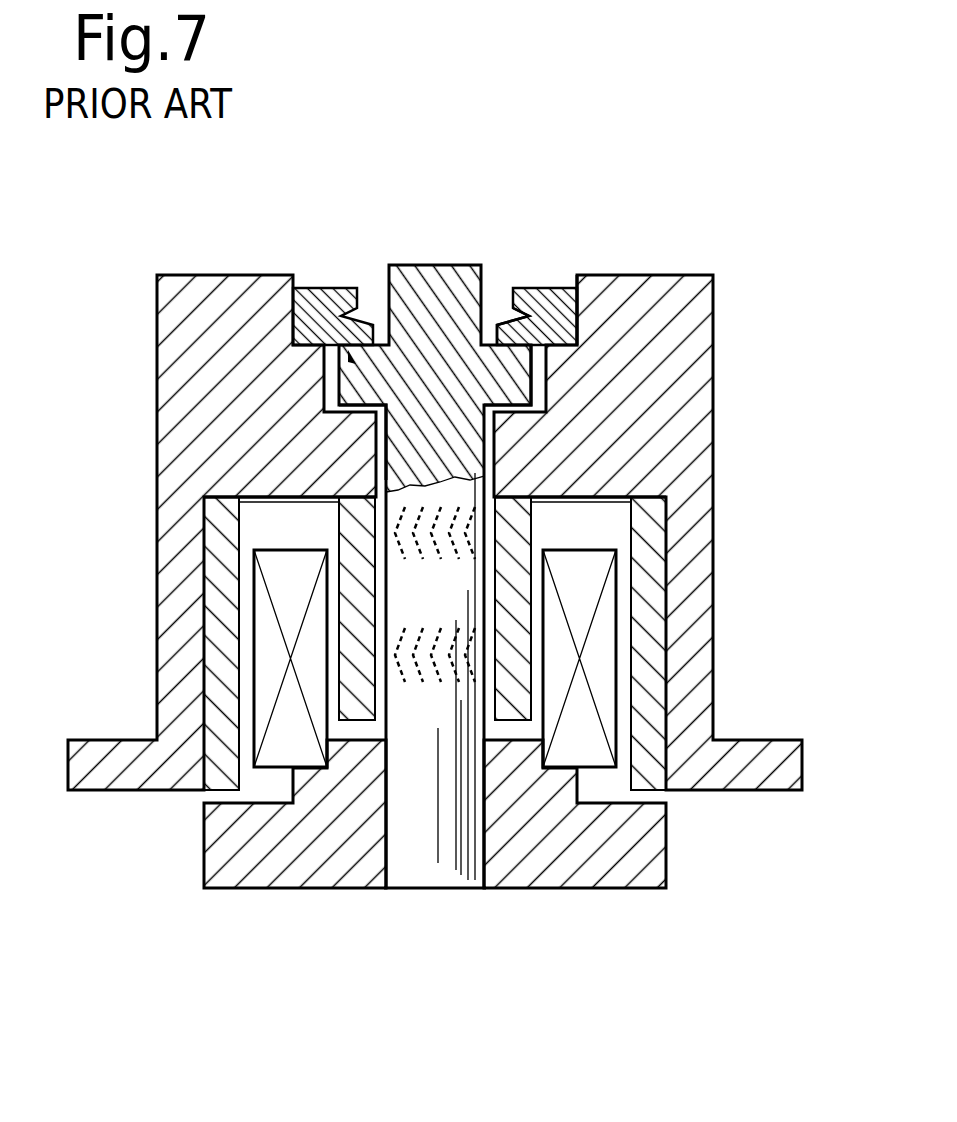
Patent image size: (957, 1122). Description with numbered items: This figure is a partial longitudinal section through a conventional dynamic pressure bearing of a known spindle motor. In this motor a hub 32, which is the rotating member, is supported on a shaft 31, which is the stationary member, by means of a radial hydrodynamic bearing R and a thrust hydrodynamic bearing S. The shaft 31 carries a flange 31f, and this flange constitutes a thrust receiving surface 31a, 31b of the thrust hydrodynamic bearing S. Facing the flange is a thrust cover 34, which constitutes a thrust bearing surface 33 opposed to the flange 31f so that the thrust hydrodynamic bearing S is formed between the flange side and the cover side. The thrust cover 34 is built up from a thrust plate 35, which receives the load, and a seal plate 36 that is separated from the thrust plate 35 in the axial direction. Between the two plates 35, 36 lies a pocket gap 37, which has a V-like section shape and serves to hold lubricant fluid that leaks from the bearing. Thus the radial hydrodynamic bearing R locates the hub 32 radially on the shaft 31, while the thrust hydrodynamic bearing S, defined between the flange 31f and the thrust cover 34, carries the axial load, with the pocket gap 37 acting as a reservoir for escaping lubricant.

The shaft 31 is at (403, 813).
The thrust receiving surface 31a is at (318, 292).
The thrust receiving surface 31b is at (348, 440).
The flange 31f is at (540, 378).
The hub 32 is at (660, 413).
The thrust bearing surface 33 is at (293, 347).
The thrust cover 34 is at (582, 215).
The thrust plate 35 is at (626, 253).
The seal plate 36 is at (530, 290).
The pocket gap 37 is at (496, 320).
The radial hydrodynamic bearing R is at (472, 532).
The thrust hydrodynamic bearing S is at (352, 356).